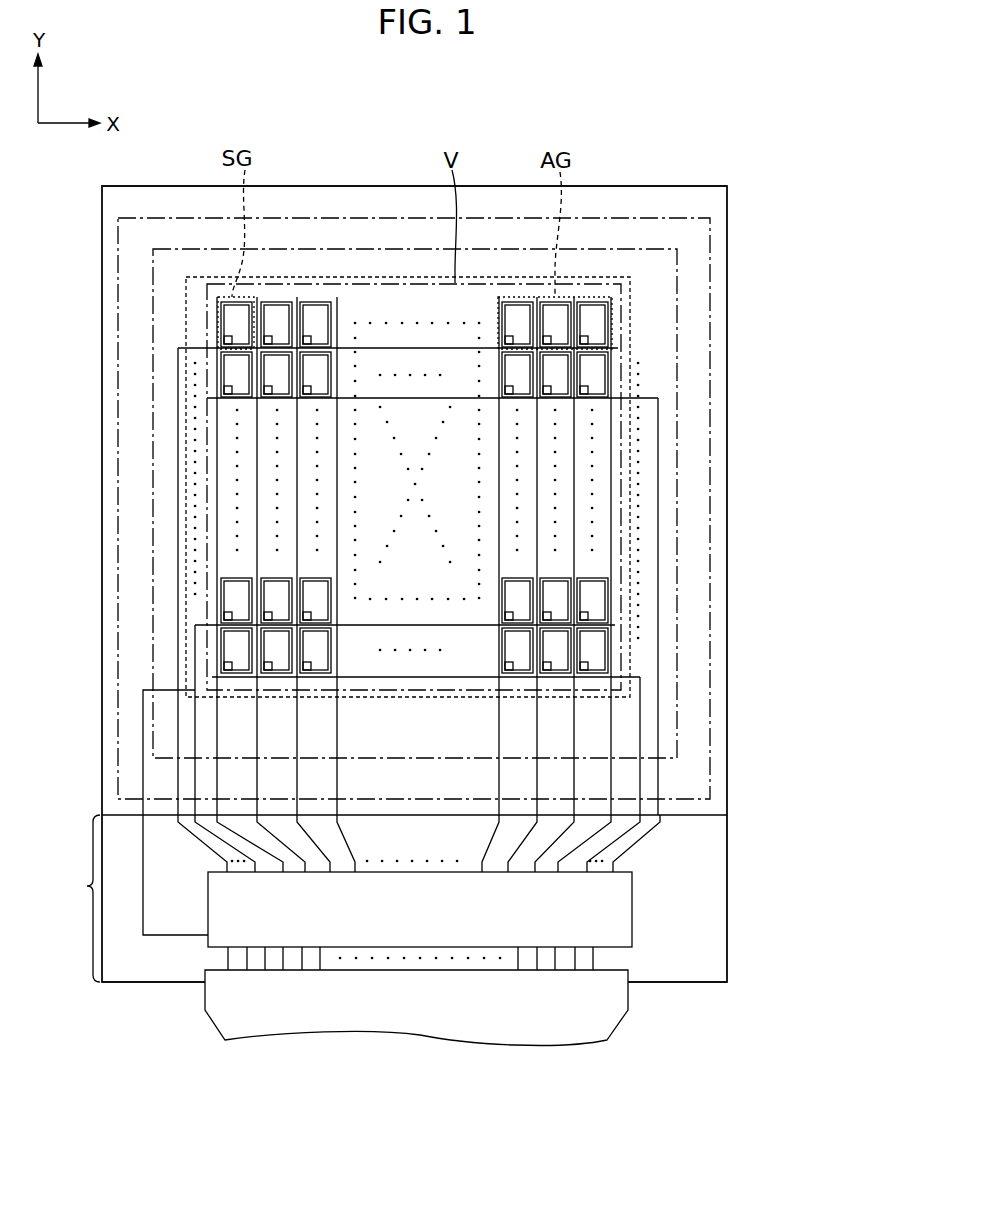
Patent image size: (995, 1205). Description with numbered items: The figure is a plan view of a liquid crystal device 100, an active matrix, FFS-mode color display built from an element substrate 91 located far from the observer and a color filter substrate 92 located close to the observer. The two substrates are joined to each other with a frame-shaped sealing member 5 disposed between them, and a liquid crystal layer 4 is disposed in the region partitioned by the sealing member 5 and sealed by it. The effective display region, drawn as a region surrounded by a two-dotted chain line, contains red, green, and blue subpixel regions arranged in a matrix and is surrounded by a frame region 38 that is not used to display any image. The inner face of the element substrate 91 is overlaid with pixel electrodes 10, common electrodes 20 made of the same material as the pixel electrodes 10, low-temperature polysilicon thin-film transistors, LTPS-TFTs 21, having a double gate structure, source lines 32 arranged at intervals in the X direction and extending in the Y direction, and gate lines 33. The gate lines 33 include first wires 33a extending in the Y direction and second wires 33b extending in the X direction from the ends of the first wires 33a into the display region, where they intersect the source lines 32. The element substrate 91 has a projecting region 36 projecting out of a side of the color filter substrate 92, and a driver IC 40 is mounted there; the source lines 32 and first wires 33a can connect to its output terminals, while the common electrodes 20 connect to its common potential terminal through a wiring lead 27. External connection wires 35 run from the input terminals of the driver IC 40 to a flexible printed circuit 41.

The liquid crystal device 100 is at (702, 148).
The element substrate 91 is at (722, 982).
The color filter substrate 92 is at (707, 817).
The sealing member 5 is at (712, 768).
The common electrodes 20 is at (632, 286).
The liquid crystal layer 4 is at (400, 267).
The frame region 38 is at (160, 520).
The pixel electrodes 10 is at (324, 300).
The LTPS-TFTs 21 is at (265, 300).
The source lines 32 is at (612, 738).
The gate lines 33 is at (790, 388).
The first wires 33a is at (660, 443).
The second wires 33b is at (643, 397).
The wiring lead 27 is at (143, 892).
The driver IC 40 is at (633, 905).
The external connection wires 35 is at (597, 963).
The flexible printed circuit 41 is at (625, 1018).
The projecting region 36 is at (78, 898).